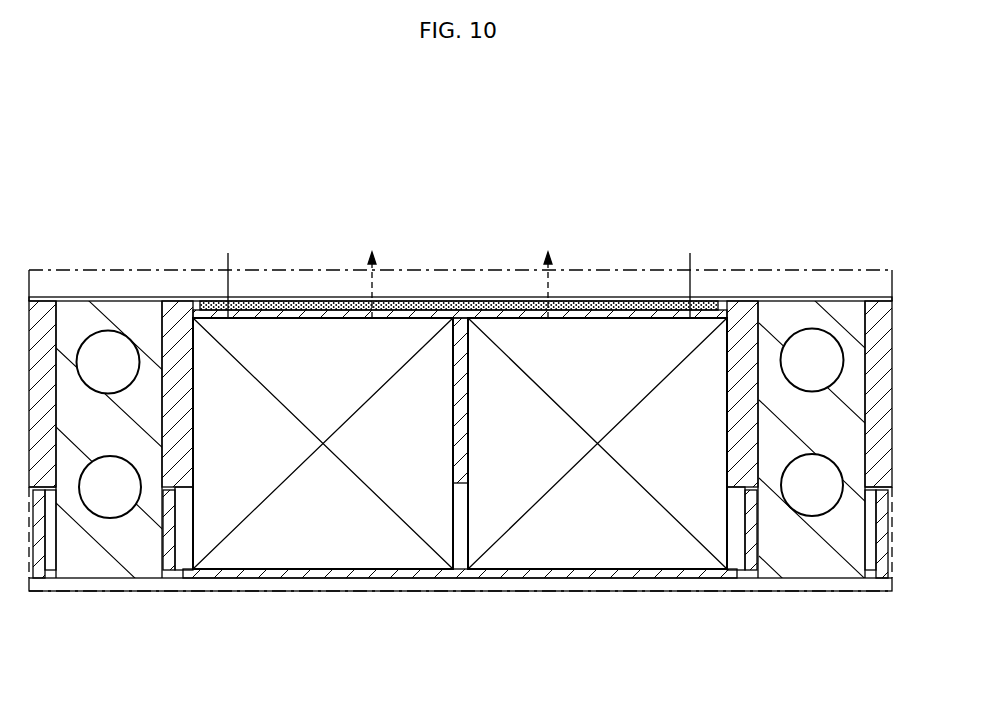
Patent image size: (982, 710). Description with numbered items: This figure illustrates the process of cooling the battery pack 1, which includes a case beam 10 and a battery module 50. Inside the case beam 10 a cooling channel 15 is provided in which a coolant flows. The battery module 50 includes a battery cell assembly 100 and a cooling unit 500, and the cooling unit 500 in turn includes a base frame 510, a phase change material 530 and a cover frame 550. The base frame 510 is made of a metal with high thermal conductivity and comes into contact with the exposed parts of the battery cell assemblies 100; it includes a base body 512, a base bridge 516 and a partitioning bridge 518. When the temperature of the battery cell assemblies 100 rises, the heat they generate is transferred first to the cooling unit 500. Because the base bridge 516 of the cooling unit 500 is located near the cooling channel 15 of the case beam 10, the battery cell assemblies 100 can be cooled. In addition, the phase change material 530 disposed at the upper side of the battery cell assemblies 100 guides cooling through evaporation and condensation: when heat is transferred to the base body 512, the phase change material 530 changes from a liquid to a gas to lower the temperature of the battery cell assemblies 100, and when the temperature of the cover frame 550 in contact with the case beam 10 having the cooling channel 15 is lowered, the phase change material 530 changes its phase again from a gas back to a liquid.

The battery pack 1 is at (165, 144).
The cooling unit 500 is at (460, 240).
The base frame 510 is at (742, 283).
The base body 512 is at (460, 262).
The phase change material 530 is at (472, 310).
The cover frame 550 is at (297, 298).
The battery module 50 is at (460, 497).
The battery cell assembly 100 is at (322, 530).
The partitioning bridge 518 is at (461, 472).
The base bridge 516 is at (182, 447).
The cooling channel 15 is at (108, 495).
The case beam 10 is at (811, 582).